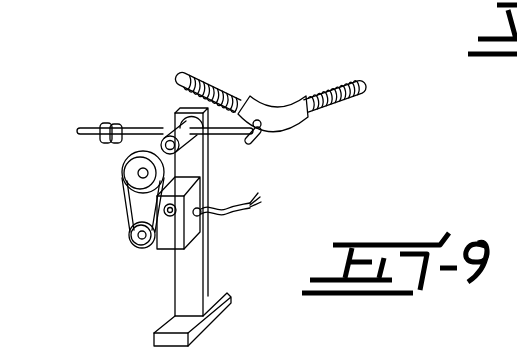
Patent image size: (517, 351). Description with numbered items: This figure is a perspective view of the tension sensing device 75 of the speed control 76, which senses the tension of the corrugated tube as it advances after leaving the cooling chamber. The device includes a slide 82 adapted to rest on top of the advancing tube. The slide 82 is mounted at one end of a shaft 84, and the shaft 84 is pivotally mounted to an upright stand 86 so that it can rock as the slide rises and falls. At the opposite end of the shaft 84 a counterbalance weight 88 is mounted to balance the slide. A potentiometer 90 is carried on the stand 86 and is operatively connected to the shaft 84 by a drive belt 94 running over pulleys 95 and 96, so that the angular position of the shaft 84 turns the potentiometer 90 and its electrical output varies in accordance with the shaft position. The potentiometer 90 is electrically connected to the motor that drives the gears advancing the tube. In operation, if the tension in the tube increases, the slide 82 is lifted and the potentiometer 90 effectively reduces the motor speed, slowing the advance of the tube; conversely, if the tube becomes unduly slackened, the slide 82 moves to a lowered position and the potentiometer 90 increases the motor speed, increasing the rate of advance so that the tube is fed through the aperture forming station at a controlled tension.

The tension sensing device 75 is at (92, 239).
The speed control 76 is at (253, 42).
The slide 82 is at (280, 108).
The shaft 84 is at (228, 132).
The upright stand 86 is at (190, 266).
The counterbalance weight 88 is at (127, 96).
The potentiometer 90 is at (193, 227).
The drive belt 94 is at (125, 210).
The pulley 95 is at (138, 173).
The pulley 96 is at (138, 247).